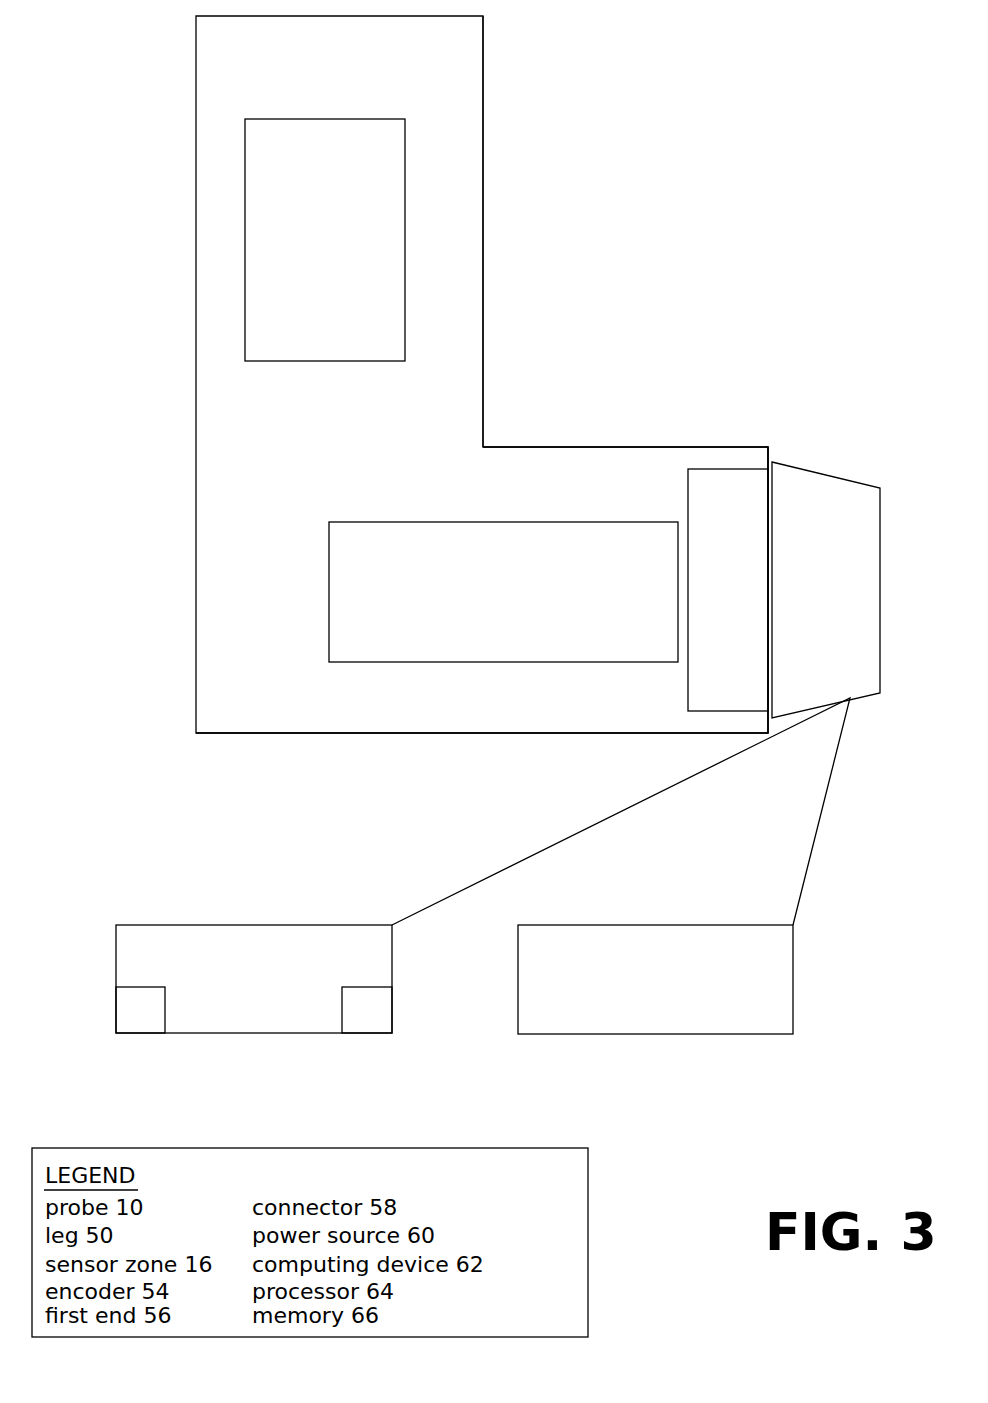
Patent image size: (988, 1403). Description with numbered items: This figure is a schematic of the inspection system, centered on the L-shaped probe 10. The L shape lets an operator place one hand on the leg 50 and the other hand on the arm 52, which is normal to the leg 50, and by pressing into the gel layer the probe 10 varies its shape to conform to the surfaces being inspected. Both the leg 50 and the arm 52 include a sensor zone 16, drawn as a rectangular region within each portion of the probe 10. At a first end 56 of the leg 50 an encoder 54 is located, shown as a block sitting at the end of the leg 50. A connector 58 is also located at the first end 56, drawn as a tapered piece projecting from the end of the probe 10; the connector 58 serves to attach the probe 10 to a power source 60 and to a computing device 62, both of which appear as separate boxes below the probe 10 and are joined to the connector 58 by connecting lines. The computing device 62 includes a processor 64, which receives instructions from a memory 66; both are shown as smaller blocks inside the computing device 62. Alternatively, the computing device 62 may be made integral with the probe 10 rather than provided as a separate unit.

The probe 10 is at (722, 72).
The leg 50 is at (627, 446).
The sensor zone 16 is at (269, 260).
The arm 52 is at (483, 211).
The encoder 54 is at (752, 487).
The first end 56 is at (770, 446).
The connector 58 is at (858, 490).
The power source 60 is at (762, 982).
The computing device 62 is at (256, 945).
The processor 64 is at (140, 1010).
The memory 66 is at (368, 1010).